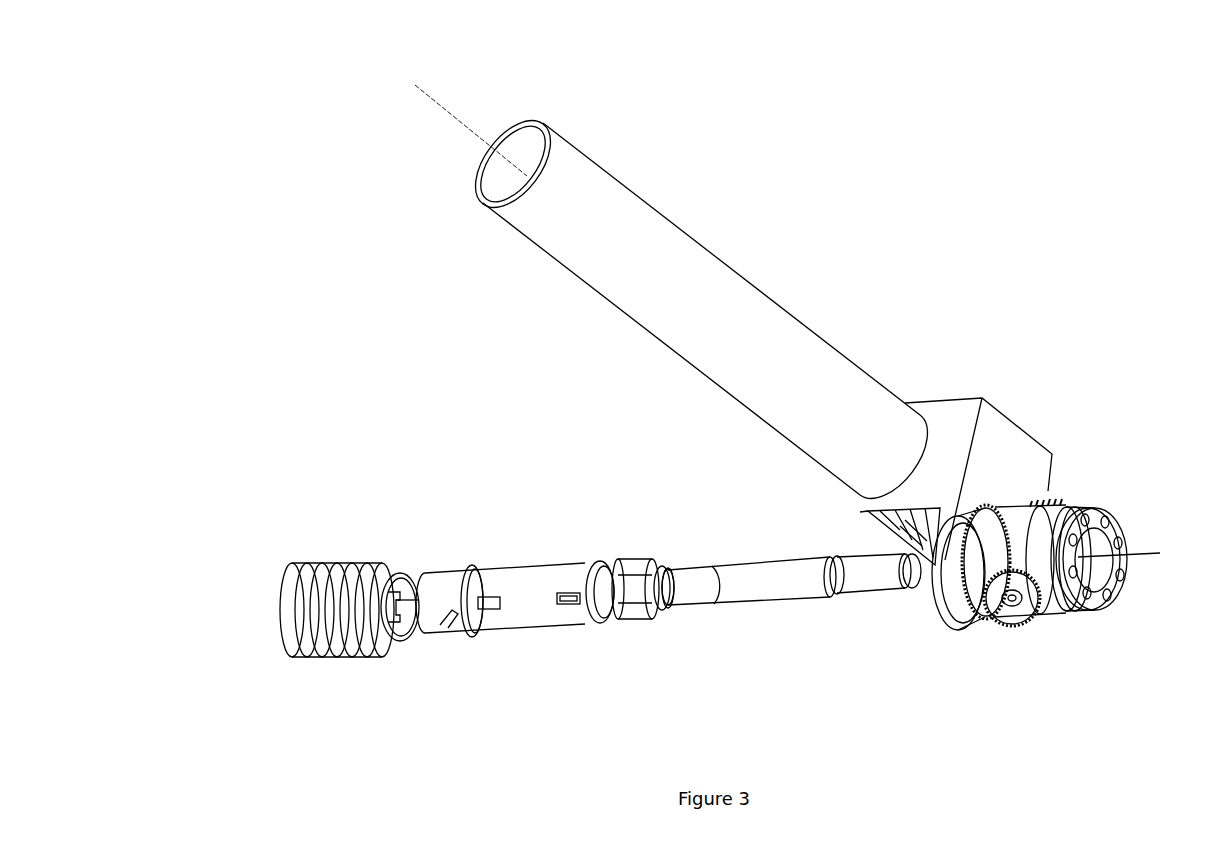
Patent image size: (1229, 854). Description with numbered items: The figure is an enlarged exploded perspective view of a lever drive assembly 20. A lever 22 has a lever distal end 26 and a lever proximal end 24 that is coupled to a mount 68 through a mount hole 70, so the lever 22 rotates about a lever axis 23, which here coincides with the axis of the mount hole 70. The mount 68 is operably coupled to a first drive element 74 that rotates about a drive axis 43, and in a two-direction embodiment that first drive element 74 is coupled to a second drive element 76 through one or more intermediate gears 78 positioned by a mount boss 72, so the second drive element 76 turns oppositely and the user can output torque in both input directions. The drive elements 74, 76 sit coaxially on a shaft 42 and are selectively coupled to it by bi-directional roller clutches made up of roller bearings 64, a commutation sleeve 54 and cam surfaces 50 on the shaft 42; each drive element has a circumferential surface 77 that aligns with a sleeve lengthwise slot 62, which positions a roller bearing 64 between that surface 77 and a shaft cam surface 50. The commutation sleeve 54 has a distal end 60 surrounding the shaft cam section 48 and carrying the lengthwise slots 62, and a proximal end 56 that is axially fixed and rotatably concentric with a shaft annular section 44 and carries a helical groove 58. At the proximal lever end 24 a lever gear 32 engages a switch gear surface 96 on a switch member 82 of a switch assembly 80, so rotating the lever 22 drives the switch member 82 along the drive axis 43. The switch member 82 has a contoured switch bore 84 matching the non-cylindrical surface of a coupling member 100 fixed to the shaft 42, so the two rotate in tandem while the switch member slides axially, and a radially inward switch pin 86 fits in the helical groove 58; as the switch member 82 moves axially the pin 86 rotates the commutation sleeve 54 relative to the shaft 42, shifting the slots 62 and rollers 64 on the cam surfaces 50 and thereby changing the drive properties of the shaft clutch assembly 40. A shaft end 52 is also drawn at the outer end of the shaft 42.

The lever drive assembly 20 is at (398, 207).
The lever 22 is at (508, 269).
The lever axis 23 is at (464, 126).
The lever proximal end 24 is at (880, 542).
The lever distal end 26 is at (453, 175).
The lever gear 32 is at (900, 537).
The shaft clutch assembly 40 is at (1078, 392).
The shaft 42 is at (779, 667).
The drive axis 43 is at (1140, 552).
The shaft annular section 44 is at (697, 622).
The shaft cam section 48 is at (808, 612).
The cam surface 50 is at (715, 566).
The shaft end 52 is at (880, 612).
The commutation sleeve 54 is at (470, 495).
The proximal end 56 is at (440, 568).
The helical groove 58 is at (447, 638).
The distal end 60 is at (540, 653).
The lengthwise slot 62 is at (556, 591).
The roller bearing 64 is at (568, 590).
The mount 68 is at (932, 412).
The mount hole 70 is at (860, 512).
The mount boss 72 is at (998, 522).
The first drive element 74 is at (985, 640).
The second drive element 76 is at (1086, 505).
The circumferential surface 77 is at (1103, 575).
The intermediate gear 78 is at (1022, 630).
The switch assembly 80 is at (296, 520).
The switch member 82 is at (268, 589).
The contoured switch bore 84 is at (378, 648).
The switch pin 86 is at (400, 648).
The switch gear surface 96 is at (298, 646).
The coupling member 100 is at (635, 607).